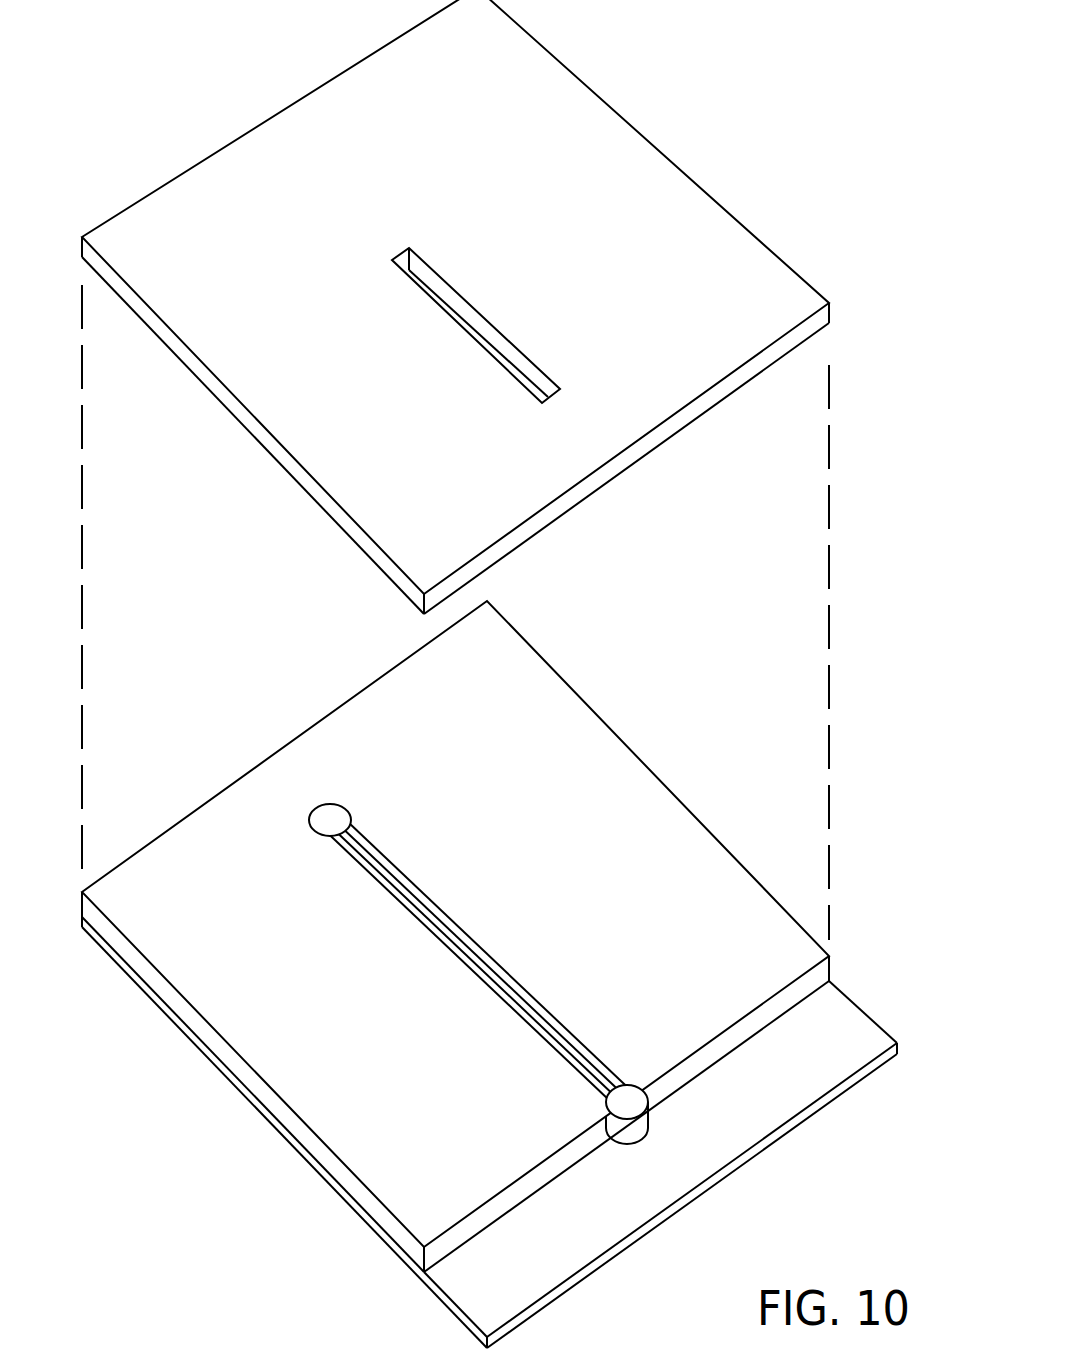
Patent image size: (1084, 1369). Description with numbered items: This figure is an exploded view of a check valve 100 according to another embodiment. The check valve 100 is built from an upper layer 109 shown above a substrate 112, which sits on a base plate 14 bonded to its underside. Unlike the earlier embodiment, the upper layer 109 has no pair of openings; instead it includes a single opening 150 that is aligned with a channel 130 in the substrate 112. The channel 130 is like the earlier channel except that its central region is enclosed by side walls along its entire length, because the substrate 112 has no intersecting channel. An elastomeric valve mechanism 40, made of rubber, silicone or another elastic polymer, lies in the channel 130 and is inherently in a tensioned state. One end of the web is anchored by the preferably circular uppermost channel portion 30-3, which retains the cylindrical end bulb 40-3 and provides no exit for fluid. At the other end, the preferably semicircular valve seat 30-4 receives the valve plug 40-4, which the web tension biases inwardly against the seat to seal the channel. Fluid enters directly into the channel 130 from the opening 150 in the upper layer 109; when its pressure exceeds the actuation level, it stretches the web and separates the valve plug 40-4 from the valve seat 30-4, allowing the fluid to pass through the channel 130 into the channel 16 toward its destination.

The check valve 100 is at (488, 674).
The upper layer 109 is at (455, 307).
The opening 150 is at (463, 299).
The substrate 112 is at (455, 936).
The base plate 14 is at (570, 1278).
The channel 16 is at (489, 974).
The channel 130 is at (495, 961).
The elastomeric valve mechanism 40 is at (518, 977).
The uppermost left hand channel portion 30-3 is at (334, 822).
The valve seat 30-4 is at (592, 1137).
The cylindrical end bulb 40-3 is at (323, 827).
The valve plug 40-4 is at (634, 1112).